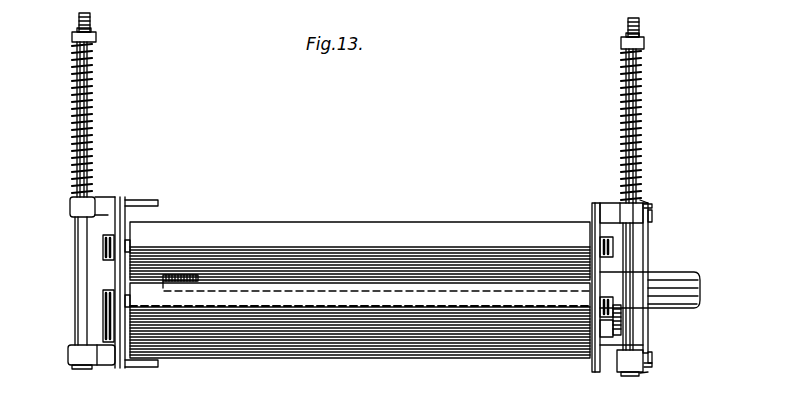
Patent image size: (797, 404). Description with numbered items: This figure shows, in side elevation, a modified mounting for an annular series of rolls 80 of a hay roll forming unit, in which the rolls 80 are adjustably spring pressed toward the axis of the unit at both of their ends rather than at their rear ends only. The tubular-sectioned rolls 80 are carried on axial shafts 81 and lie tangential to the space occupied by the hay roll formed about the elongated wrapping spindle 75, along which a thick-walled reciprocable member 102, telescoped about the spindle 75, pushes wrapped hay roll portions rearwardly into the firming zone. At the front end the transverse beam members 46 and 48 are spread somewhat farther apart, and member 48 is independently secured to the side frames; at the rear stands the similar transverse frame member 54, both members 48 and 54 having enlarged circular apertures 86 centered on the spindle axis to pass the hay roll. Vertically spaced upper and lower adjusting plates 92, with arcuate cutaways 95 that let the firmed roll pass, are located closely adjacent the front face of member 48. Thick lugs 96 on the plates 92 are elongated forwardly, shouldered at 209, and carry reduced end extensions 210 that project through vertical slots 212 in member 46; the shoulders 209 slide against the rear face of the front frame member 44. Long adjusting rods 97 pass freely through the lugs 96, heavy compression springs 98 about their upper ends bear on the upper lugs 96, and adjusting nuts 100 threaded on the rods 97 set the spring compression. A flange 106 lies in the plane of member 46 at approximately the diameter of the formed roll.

The adjusting rods 97 is at (92, 20).
The adjusting nuts 100 is at (70, 38).
The compression springs 98 is at (77, 77).
The rear transversely extending frame member 54 is at (133, 200).
The adjusting plates 92 is at (113, 219).
The lugs or bars 96 is at (105, 368).
The axial shafts 81 is at (103, 300).
The feeding, forming and firming rolls 80 is at (385, 222).
The wrapping spindle 75 is at (228, 282).
The intermediate transverse frame member 48 is at (590, 366).
The front transversely extending frame member 44 is at (650, 248).
The reciprocable member 102 is at (702, 288).
The circular apertures 86 is at (600, 226).
The arcuate cutaways 95 is at (590, 232).
The flange 106 is at (621, 313).
The intermediate transverse frame member 46 is at (650, 343).
The reduced end extensions 210 is at (652, 211).
The vertical slots 212 is at (650, 206).
The shoulders 209 is at (640, 200).